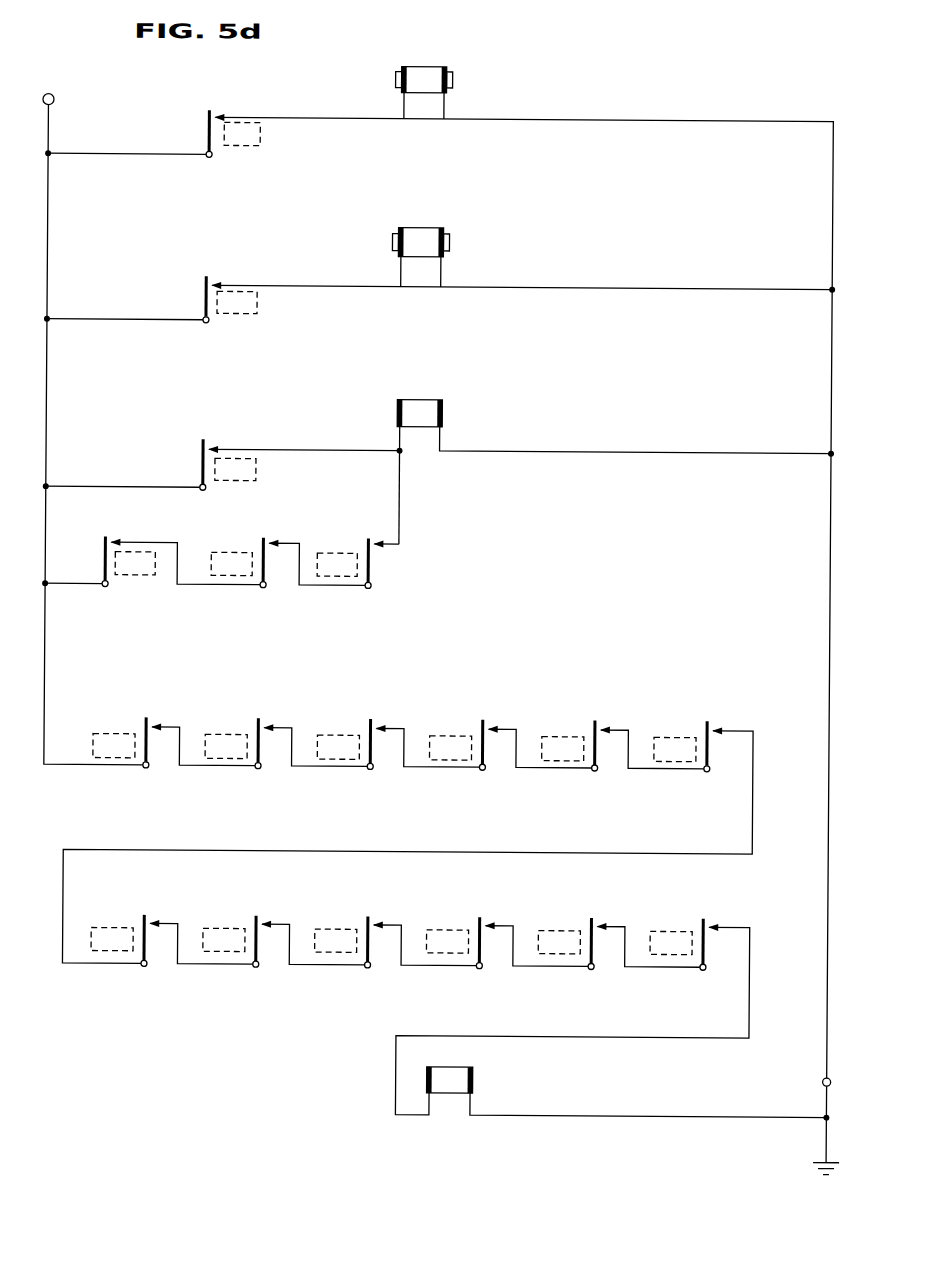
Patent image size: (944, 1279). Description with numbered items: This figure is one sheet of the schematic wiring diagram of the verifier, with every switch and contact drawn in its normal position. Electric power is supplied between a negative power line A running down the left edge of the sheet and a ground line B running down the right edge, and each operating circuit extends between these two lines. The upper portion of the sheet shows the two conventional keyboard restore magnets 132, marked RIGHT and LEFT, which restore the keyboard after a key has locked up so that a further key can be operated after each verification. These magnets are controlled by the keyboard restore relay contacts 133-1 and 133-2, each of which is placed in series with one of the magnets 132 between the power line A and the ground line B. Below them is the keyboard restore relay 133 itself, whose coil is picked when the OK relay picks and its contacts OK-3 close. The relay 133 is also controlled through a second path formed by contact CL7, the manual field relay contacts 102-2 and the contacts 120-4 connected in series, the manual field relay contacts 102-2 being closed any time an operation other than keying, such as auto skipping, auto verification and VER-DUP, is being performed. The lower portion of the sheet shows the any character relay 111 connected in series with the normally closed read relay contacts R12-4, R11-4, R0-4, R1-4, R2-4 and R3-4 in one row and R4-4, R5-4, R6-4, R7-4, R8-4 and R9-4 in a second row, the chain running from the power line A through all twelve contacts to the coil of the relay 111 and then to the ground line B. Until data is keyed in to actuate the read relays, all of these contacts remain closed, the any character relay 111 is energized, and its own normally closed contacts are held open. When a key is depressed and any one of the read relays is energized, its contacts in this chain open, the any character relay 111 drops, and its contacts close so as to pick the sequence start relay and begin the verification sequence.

The negative power line A is at (50, 99).
The ground line B is at (826, 1080).
The keyboard restore magnets 132 is at (428, 71).
The keyboard restore relay 133 is at (442, 409).
The keyboard restore relay contacts 133-1 is at (214, 117).
The keyboard restore relay contacts 133-2 is at (211, 285).
The OK relay contacts OK-3 is at (210, 449).
The contact CL7 is at (112, 542).
The manual field relay contacts 102-2 is at (270, 543).
The relay contacts 120-4 is at (377, 543).
The read relay contacts R12-4 is at (156, 726).
The read relay contacts R11-4 is at (268, 726).
The read relay contacts R0-4 is at (380, 726).
The read relay contacts R1-4 is at (492, 726).
The read relay contacts R2-4 is at (604, 726).
The read relay contacts R3-4 is at (717, 726).
The read relay contacts R4-4 is at (155, 923).
The read relay contacts R5-4 is at (267, 923).
The read relay contacts R6-4 is at (379, 923).
The read relay contacts R7-4 is at (491, 923).
The read relay contacts R8-4 is at (603, 923).
The read relay contacts R9-4 is at (715, 923).
The any character relay 111 is at (474, 1082).